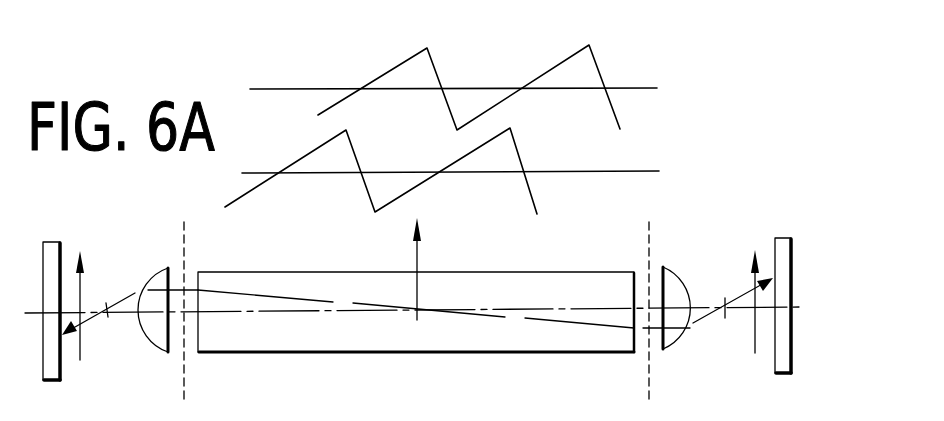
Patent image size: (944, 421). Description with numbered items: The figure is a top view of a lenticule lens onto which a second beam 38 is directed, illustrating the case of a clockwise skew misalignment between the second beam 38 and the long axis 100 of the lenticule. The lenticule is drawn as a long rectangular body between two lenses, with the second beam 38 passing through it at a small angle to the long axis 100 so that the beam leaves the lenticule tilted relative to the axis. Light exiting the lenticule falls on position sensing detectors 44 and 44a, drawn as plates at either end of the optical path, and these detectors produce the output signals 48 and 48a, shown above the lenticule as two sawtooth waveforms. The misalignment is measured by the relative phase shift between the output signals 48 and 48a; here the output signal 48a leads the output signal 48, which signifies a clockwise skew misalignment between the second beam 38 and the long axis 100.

The output signal 48 is at (377, 79).
The output signal 48a is at (367, 193).
The second beam 38 is at (318, 300).
The long axis 100 is at (543, 310).
The position sensing detector 44 is at (781, 238).
The position sensing detector 44a is at (49, 240).